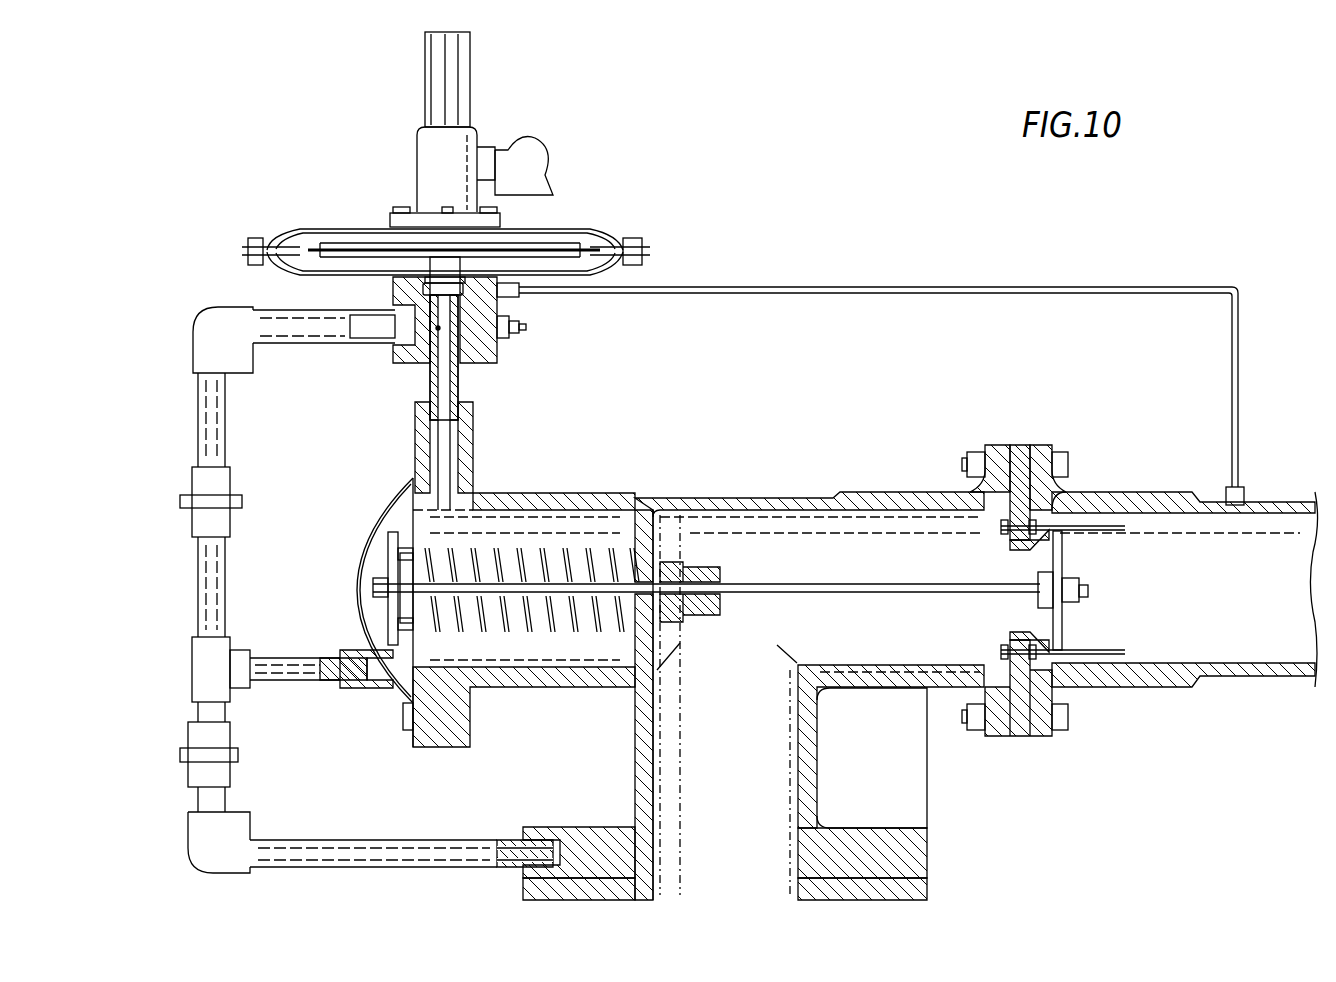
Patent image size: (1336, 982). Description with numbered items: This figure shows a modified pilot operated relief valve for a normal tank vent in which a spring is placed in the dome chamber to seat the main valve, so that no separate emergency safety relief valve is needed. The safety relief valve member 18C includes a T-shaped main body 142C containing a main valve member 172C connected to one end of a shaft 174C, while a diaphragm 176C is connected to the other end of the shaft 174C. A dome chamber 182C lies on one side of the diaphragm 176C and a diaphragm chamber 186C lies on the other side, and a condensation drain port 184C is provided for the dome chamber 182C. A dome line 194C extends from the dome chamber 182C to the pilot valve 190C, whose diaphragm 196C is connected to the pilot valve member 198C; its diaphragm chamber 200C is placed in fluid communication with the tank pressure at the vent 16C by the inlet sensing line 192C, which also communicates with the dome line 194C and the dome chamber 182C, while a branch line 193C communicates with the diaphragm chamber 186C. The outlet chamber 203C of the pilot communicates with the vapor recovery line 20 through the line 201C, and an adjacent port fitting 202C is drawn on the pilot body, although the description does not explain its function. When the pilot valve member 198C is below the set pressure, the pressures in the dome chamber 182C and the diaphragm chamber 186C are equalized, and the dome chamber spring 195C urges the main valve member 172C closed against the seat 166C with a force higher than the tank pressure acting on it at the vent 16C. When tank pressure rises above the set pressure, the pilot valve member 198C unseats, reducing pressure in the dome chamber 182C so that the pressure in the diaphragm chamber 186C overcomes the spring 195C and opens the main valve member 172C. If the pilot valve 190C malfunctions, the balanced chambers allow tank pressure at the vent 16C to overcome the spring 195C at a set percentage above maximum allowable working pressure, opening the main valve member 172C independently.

The vent 16C is at (750, 785).
The safety relief valve member 18C is at (674, 478).
The vapor recovery line 20 is at (1283, 498).
The T-shaped main body 142C is at (805, 503).
The seat 166C is at (1053, 634).
The main valve member 172C is at (1064, 554).
The shaft 174C is at (900, 590).
The diaphragm 176C is at (393, 508).
The dome chamber 182C is at (493, 657).
The condensation drain port 184C is at (667, 663).
The diaphragm chamber 186C is at (370, 610).
The pilot valve 190C is at (560, 223).
The inlet sensing line 192C is at (197, 565).
The branch line 193C is at (297, 687).
The dome line 194C is at (460, 386).
The dome chamber spring 195C is at (575, 640).
The diaphragm 196C is at (587, 238).
The pilot valve member 198C is at (438, 277).
The diaphragm chamber 200C is at (587, 263).
The line 201C is at (1008, 287).
The port fitting 202C is at (508, 298).
The outlet chamber 203C is at (393, 301).